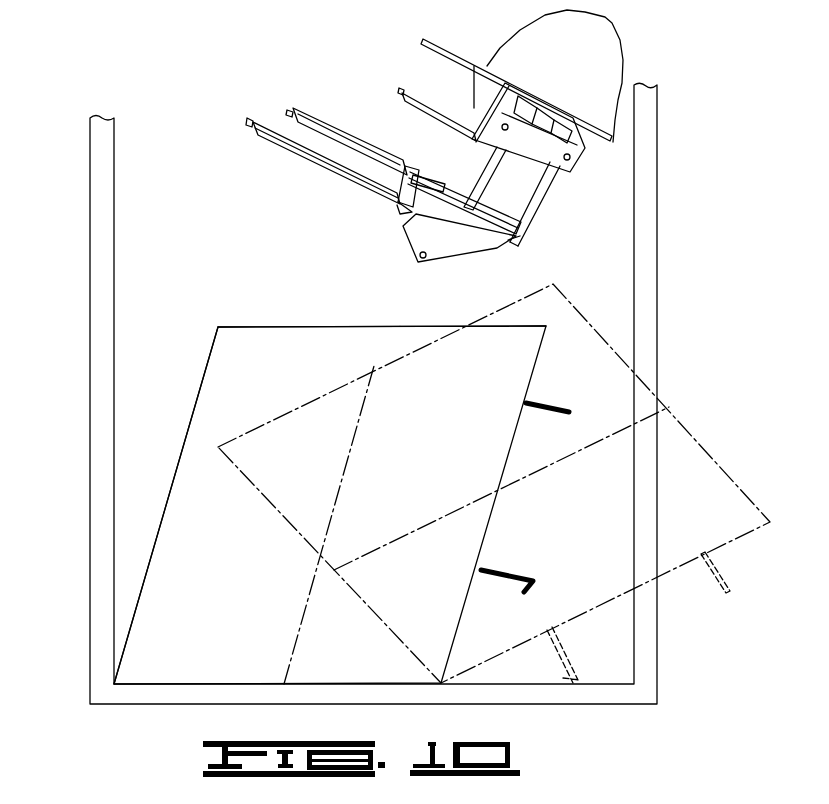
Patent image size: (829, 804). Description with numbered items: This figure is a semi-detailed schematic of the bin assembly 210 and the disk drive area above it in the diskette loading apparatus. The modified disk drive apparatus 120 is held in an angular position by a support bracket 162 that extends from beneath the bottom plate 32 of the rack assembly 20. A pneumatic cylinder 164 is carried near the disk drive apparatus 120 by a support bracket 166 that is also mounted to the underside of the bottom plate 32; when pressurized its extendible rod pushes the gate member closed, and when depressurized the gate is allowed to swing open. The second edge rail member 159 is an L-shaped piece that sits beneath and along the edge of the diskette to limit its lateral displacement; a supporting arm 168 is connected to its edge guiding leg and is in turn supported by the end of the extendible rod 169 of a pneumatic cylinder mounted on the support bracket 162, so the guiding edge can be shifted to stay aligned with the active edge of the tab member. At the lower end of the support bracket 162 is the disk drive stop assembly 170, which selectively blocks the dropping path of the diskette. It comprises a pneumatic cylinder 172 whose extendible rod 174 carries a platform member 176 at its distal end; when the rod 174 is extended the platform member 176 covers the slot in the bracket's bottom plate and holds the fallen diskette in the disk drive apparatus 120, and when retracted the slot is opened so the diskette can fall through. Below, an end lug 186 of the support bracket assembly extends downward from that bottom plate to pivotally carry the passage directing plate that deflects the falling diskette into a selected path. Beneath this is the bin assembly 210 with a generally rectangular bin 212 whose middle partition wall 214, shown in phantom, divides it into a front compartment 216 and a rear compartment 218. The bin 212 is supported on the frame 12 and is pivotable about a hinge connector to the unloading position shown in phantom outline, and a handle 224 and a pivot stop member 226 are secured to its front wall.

The frame 12 is at (97, 273).
The rack assembly 20 is at (598, 45).
The bottom plate 32 is at (449, 42).
The modified disk drive apparatus 120 is at (523, 199).
The second edge rail member 159 is at (515, 237).
The support bracket 162 is at (553, 191).
The pneumatic cylinder 164 is at (418, 88).
The support bracket 166 is at (474, 87).
The supporting arm 168 is at (545, 148).
The extendible rod 169 is at (572, 155).
The disk drive stop assembly 170 is at (339, 116).
The pneumatic cylinder 172 is at (313, 112).
The extendible rod 174 is at (430, 160).
The platform member 176 is at (433, 173).
The end lug 186 is at (466, 240).
The bin assembly 210 is at (206, 345).
The bin 212 is at (198, 453).
The middle partition wall 214 is at (360, 420).
The front compartment 216 is at (449, 316).
The rear compartment 218 is at (292, 314).
The handle 224 is at (548, 400).
The pivot stop member 226 is at (510, 570).